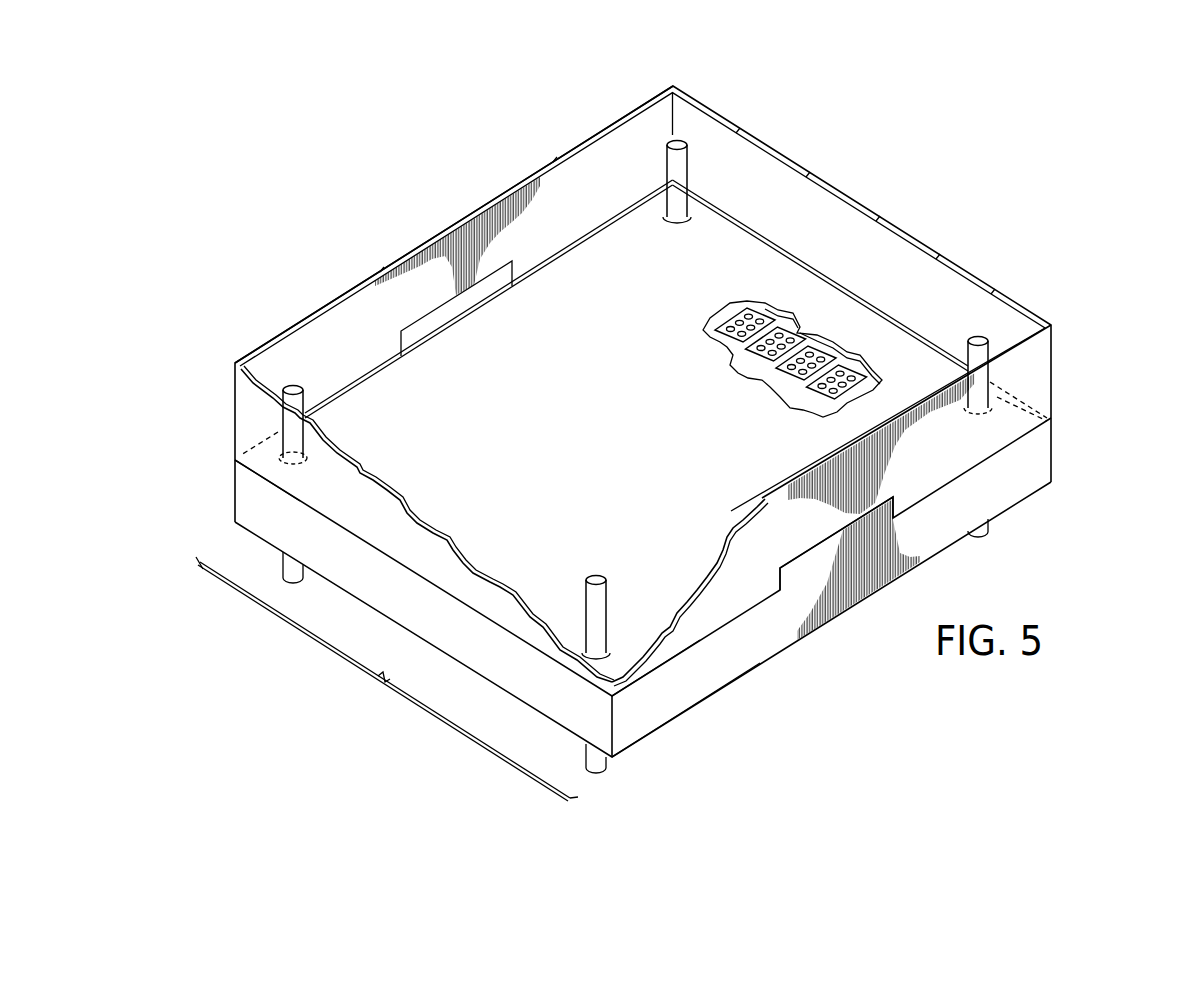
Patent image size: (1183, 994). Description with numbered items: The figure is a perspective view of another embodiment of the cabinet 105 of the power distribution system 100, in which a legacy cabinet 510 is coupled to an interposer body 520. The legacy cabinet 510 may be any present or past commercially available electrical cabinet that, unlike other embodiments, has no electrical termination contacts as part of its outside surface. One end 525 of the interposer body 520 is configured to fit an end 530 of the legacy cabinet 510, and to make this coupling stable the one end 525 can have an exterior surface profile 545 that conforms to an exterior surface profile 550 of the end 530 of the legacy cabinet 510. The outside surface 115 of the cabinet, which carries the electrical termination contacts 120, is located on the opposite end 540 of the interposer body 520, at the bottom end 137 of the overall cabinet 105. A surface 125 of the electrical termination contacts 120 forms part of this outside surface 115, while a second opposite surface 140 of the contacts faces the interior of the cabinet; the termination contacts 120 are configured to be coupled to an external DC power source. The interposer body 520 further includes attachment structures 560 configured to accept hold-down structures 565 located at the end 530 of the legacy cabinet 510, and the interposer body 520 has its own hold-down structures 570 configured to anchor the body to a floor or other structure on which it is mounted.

The power distribution system 100 is at (905, 160).
The cabinet 105 is at (448, 210).
The outside surface 115 is at (660, 710).
The electrical termination contacts 120 is at (738, 326).
The surface of the electrical termination contacts 125 is at (720, 348).
The bottom end 137 is at (387, 679).
The second opposite surface 140 is at (793, 333).
The legacy cabinet 510 is at (1065, 358).
The interposer body 520 is at (1068, 450).
The one end of the interposer body 525 is at (342, 512).
The end of the legacy cabinet 530 is at (255, 473).
The opposite end of the interposer body 540 is at (738, 698).
The exterior surface profile of the interposer body end 545 is at (808, 553).
The exterior surface profile of the legacy cabinet end 550 is at (830, 540).
The attachment structures 560 is at (664, 220).
The hold-down structures 565 is at (666, 172).
The hold-down structures of the interposer body 570 is at (283, 565).